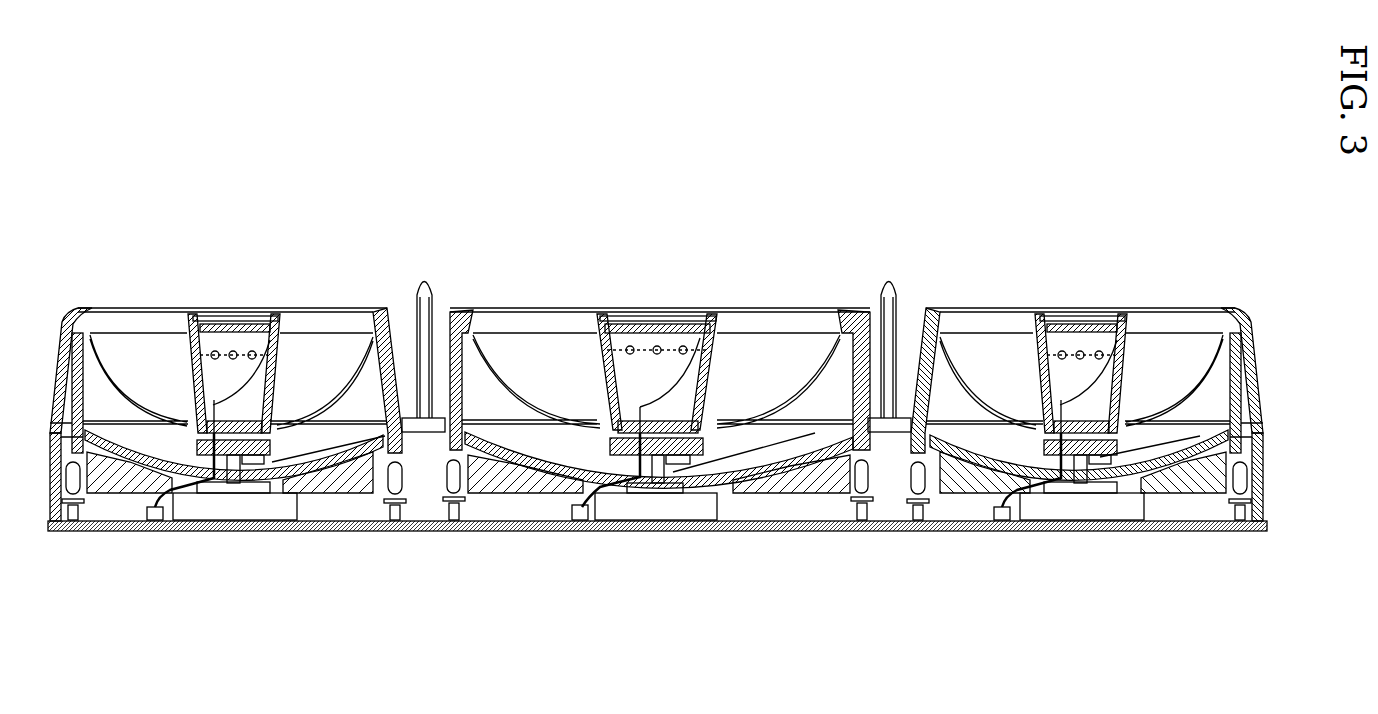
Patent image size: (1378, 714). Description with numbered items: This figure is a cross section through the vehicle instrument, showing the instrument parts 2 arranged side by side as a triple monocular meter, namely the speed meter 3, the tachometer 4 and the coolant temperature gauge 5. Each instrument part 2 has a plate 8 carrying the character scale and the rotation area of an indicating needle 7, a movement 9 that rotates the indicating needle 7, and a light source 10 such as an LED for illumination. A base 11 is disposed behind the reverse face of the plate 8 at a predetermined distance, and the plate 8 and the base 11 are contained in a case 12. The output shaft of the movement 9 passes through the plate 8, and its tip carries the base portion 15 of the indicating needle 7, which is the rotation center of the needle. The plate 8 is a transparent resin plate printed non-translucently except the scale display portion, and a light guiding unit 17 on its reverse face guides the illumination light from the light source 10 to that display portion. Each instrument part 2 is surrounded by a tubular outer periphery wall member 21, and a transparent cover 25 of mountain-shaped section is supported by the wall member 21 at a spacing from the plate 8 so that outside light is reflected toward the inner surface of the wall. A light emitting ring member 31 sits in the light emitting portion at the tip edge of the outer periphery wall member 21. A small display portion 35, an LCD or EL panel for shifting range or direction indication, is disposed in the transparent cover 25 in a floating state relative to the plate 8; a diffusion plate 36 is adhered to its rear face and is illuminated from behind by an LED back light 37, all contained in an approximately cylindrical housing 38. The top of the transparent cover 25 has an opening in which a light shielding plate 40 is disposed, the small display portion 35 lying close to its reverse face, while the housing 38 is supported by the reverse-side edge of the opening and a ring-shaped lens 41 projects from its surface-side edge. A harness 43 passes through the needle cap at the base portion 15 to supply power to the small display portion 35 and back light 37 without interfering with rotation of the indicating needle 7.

The instrument part 2 is at (662, 236).
The speed meter 3 is at (740, 275).
The tachometer 4 is at (1173, 263).
The coolant temperature gauge 5 is at (320, 262).
The indicating needle 7 is at (290, 457).
The plate 8 is at (128, 533).
The movement 9 is at (226, 503).
The light source 10 is at (58, 533).
The base 11 is at (410, 440).
The case 12 is at (490, 533).
The base portion 15 is at (197, 442).
The light guiding unit 17 is at (334, 490).
The outer periphery wall member 21 is at (660, 331).
The transparent cover 25 is at (152, 370).
The light emitting ring member 31 is at (75, 307).
The small display portion 35 is at (265, 310).
The diffusion plate 36 is at (251, 310).
The back light 37 is at (216, 312).
The housing 38 is at (286, 373).
The light shielding plate 40 is at (238, 310).
The lens 41 is at (281, 310).
The harness 43 is at (200, 520).